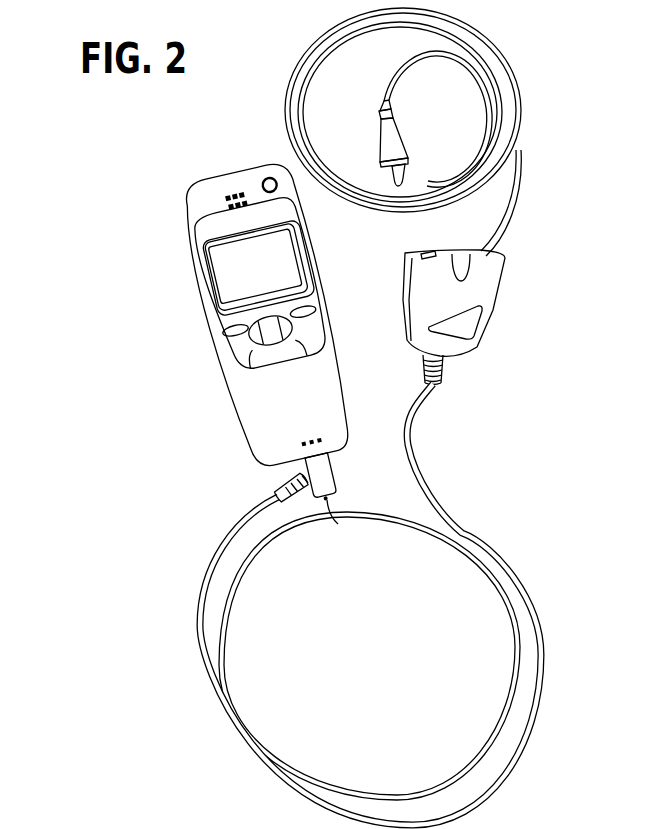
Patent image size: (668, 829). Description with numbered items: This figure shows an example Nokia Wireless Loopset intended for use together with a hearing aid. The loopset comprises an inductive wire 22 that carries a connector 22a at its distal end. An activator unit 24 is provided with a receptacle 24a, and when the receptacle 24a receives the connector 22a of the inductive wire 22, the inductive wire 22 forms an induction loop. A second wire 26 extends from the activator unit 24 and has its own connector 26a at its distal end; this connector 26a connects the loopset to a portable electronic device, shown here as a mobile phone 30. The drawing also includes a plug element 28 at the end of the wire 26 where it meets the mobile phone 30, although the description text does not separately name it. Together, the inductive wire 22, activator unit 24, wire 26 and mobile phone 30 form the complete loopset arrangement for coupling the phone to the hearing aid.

The inductive wire 22 is at (521, 103).
The connector 22a is at (408, 157).
The activator unit 24 is at (504, 312).
The receptacle 24a is at (436, 255).
The wire 26 is at (543, 702).
The connector 26a is at (338, 524).
The connector plug 28 is at (355, 427).
The mobile phone 30 is at (203, 307).